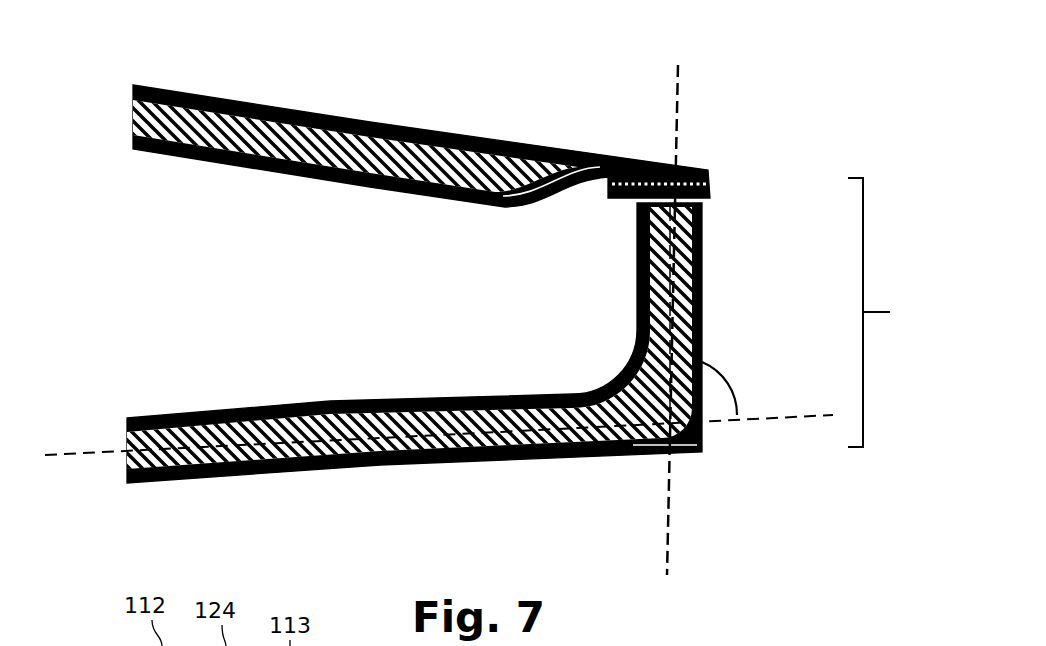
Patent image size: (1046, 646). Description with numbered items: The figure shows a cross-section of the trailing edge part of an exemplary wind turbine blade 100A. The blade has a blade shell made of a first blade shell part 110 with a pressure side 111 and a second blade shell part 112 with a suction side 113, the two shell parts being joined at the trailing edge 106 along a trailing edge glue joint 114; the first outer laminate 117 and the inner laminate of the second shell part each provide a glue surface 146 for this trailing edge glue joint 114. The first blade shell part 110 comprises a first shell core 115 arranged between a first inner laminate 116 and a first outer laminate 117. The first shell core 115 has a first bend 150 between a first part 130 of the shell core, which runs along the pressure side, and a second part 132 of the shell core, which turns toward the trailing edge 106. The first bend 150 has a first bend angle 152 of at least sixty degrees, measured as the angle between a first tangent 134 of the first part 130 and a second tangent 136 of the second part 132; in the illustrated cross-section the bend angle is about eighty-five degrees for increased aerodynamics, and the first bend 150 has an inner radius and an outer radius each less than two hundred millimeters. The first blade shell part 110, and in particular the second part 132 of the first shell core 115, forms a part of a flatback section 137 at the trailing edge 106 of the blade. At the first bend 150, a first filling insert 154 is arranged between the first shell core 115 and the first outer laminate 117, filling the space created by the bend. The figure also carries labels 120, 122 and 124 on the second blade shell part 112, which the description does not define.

The wind turbine blade 100A is at (640, 80).
The trailing edge 106 is at (702, 290).
The first blade shell part 110 is at (275, 467).
The pressure side 111 is at (447, 462).
The second blade shell part 112 is at (352, 118).
The suction side 113 is at (487, 137).
The trailing edge glue joint 114 is at (600, 186).
The first shell core 115 is at (127, 442).
The first inner laminate 116 is at (305, 398).
The first outer laminate 117 is at (580, 460).
The upper arm proximal end 120 is at (133, 113).
The upper arm bottom layer 122 is at (330, 180).
The upper arm top layer 124 is at (207, 93).
The first part of the shell core 130 is at (492, 405).
The second part of the shell core 132 is at (637, 291).
The first tangent 134 is at (800, 415).
The second tangent 136 is at (677, 93).
The flatback section 137 is at (890, 312).
The glue surface 146 is at (710, 187).
The first bend 150 is at (613, 378).
The first bend angle 152 is at (710, 377).
The first filling insert 154 is at (697, 455).